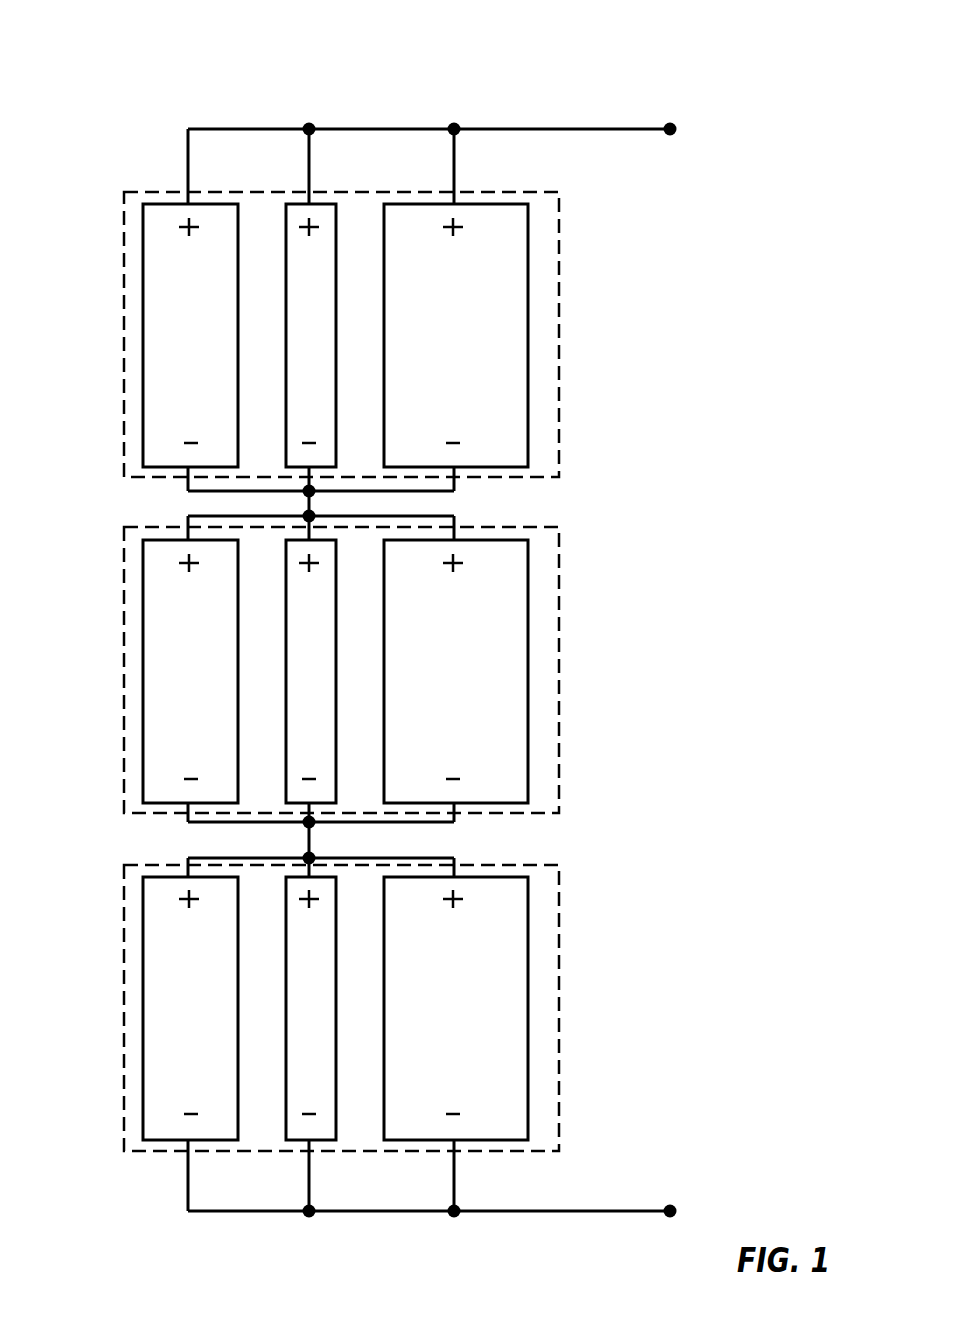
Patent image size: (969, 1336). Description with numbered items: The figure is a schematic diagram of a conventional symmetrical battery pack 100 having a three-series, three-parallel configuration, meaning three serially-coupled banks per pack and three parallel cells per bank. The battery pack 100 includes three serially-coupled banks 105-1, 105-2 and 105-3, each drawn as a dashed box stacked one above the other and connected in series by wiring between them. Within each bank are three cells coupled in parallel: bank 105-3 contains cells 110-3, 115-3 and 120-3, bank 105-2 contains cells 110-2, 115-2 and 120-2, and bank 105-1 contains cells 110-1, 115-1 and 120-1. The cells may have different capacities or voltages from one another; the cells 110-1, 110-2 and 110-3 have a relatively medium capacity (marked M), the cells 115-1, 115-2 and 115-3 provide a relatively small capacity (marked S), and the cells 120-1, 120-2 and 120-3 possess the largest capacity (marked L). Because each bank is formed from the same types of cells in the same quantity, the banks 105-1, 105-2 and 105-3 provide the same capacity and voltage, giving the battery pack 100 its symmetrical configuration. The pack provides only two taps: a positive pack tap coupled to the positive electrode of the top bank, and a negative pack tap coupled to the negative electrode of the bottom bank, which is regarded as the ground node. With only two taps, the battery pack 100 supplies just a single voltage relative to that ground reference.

The battery pack 100 is at (104, 38).
The bank 105-3 is at (125, 186).
The bank 105-2 is at (125, 521).
The bank 105-1 is at (125, 859).
The cell 110-3 is at (190, 335).
The cell 110-2 is at (190, 671).
The cell 110-1 is at (190, 1008).
The cell 115-3 is at (311, 335).
The cell 115-2 is at (311, 671).
The cell 115-1 is at (311, 1008).
The cell 120-3 is at (456, 335).
The cell 120-2 is at (456, 671).
The cell 120-1 is at (456, 1008).